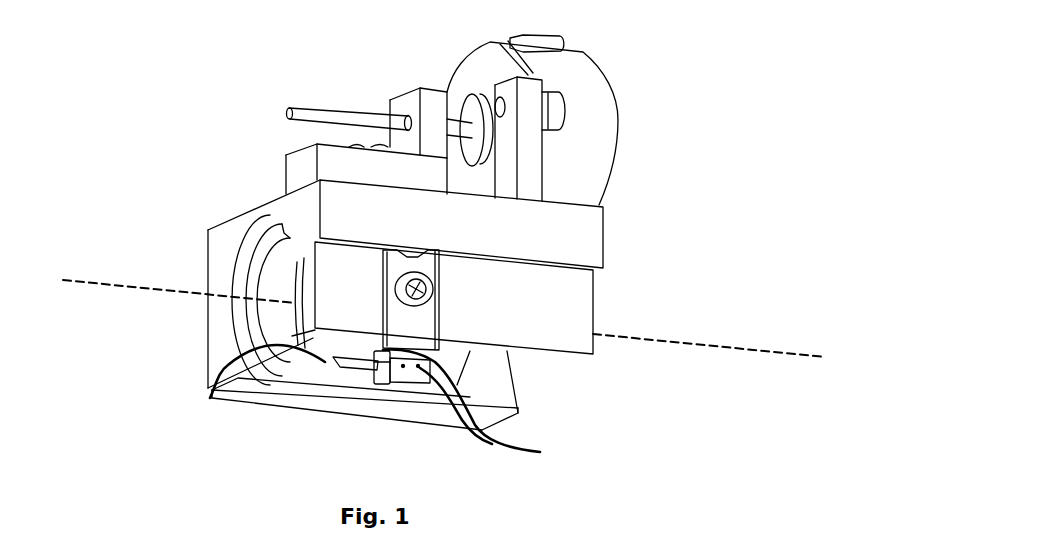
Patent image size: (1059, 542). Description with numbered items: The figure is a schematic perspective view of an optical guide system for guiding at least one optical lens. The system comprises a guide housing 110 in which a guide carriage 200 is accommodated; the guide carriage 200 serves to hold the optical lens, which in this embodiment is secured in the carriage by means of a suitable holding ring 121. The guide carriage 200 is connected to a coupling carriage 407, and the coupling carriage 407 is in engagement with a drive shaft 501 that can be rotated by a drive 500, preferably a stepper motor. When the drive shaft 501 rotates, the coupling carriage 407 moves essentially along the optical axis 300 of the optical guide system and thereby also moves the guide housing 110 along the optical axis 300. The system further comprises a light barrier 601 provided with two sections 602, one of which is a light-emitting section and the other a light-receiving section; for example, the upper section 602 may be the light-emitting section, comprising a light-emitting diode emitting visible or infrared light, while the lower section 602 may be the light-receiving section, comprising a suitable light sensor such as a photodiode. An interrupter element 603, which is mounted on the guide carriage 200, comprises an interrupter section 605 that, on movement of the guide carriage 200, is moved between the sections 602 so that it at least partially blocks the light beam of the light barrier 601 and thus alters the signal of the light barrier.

The guide housing 110 is at (217, 243).
The holding ring 121 is at (210, 398).
The guide carriage 200 is at (296, 390).
The optical axis 300 is at (112, 286).
The coupling carriage 407 is at (281, 163).
The drive 500 is at (626, 136).
The drive shaft 501 is at (354, 114).
The light barrier 601 is at (437, 348).
The sections 602 is at (481, 406).
The interrupter element 603 is at (366, 372).
The interrupter section 605 is at (340, 364).